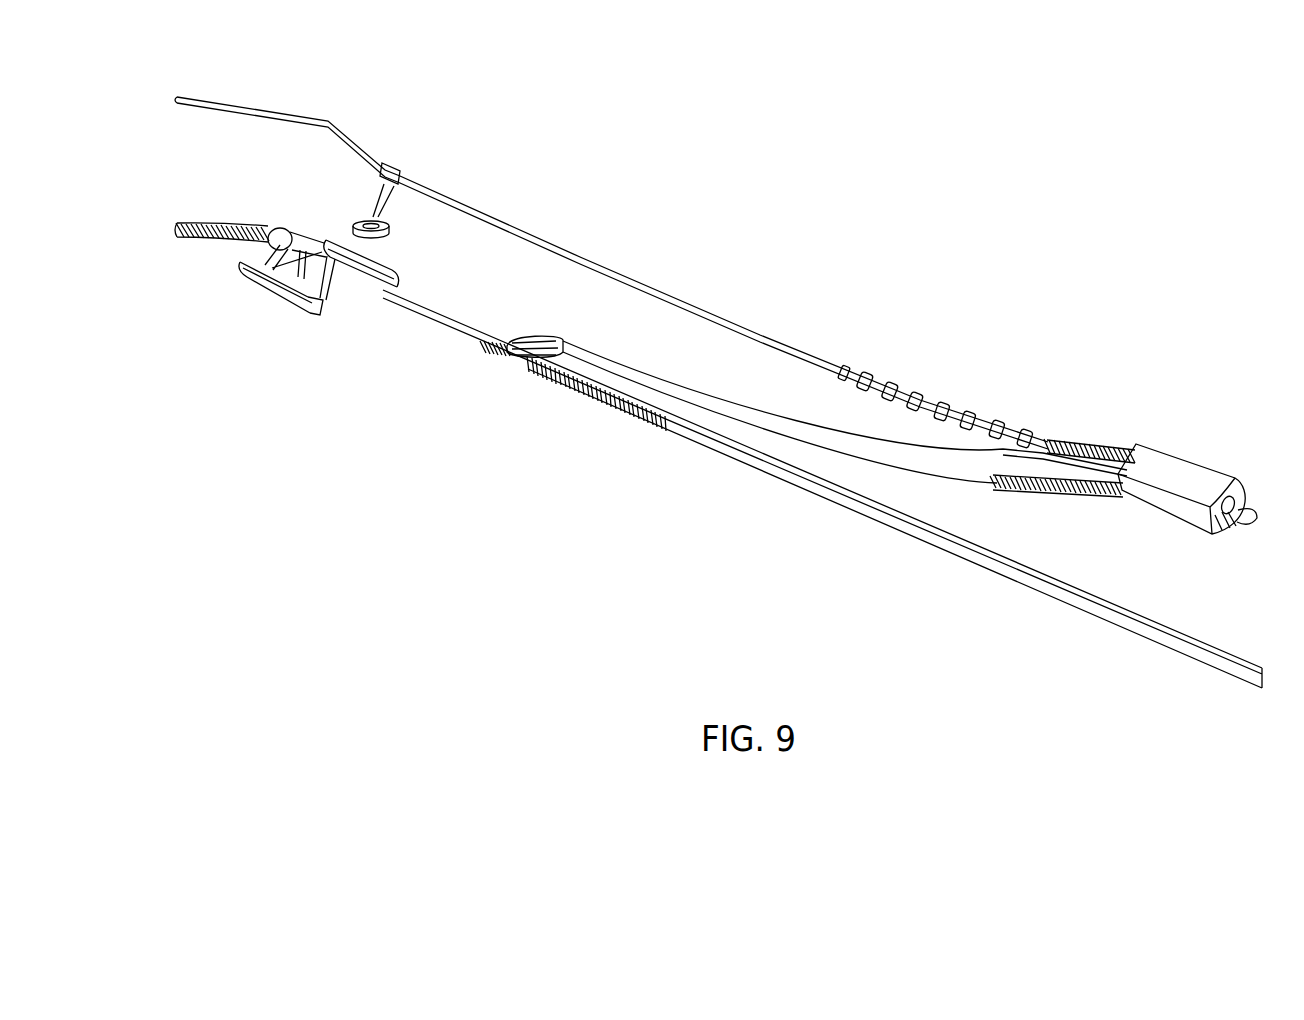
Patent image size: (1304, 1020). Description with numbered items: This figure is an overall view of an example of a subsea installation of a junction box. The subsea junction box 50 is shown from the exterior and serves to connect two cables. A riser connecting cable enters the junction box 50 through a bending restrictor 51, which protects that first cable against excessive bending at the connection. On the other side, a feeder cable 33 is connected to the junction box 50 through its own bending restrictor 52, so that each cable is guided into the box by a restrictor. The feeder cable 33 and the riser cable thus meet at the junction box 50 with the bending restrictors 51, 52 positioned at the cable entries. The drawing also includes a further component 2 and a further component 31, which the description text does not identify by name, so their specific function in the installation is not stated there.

The support bar 2 is at (887, 523).
The cable 31 is at (672, 298).
The first feeder cable 33 is at (855, 430).
The subsea junction box 50 is at (1200, 474).
The bending restrictor 51 is at (1050, 443).
The bending restrictor 52 is at (1066, 482).